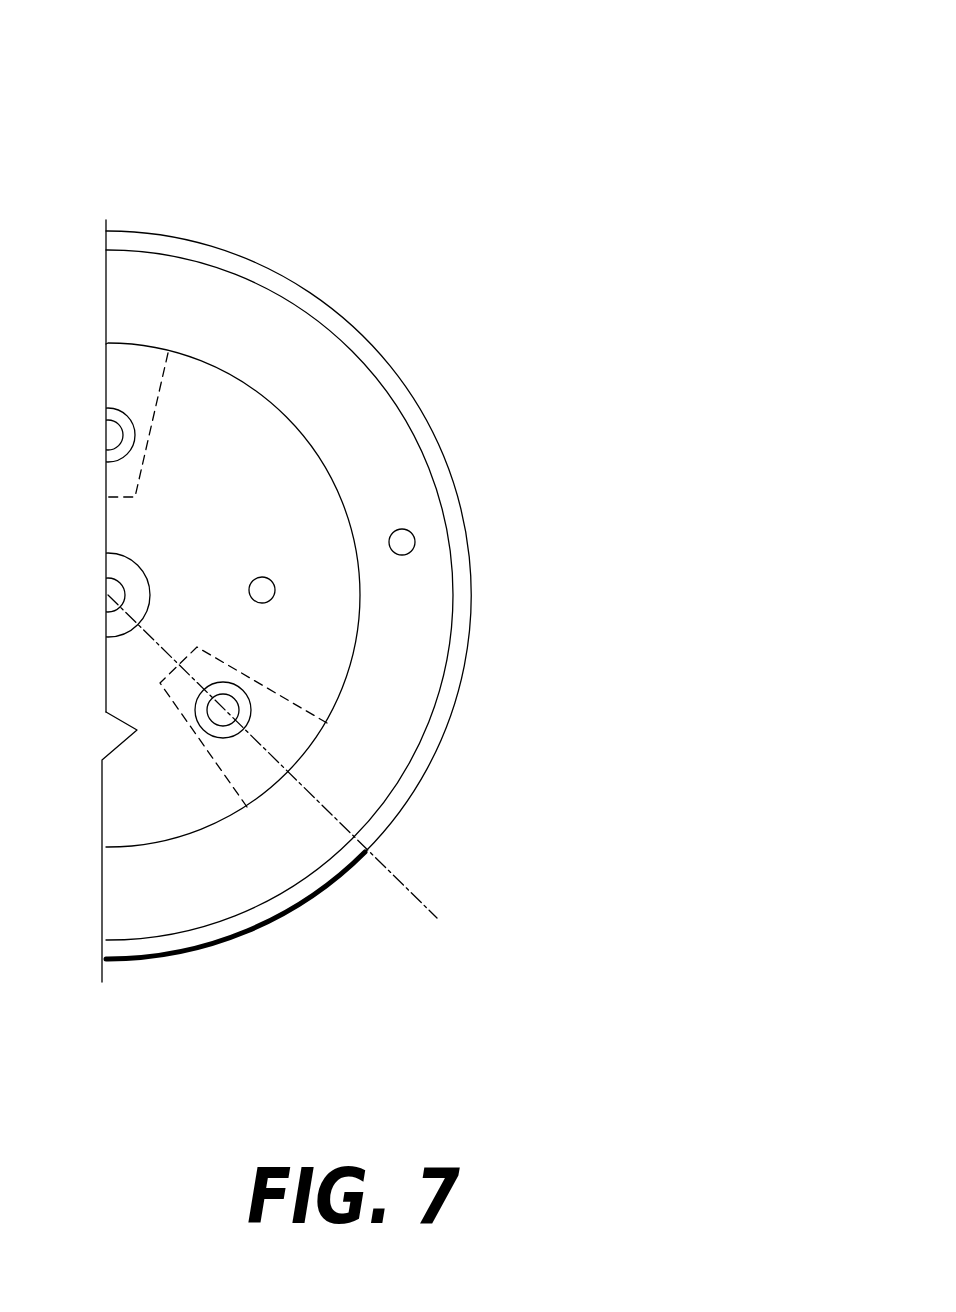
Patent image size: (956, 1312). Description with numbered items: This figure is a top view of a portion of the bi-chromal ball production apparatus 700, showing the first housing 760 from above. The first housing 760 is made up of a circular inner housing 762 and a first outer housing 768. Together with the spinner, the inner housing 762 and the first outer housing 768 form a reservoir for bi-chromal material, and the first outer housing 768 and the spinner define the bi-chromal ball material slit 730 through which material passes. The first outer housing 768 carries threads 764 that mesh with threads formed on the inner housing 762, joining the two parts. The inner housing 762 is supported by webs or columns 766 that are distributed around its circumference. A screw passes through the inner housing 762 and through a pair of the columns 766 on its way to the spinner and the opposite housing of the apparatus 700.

The bi-chromal ball production apparatus 700 is at (588, 118).
The bi-chromal ball material slit 730 is at (385, 367).
The first housing 760 is at (262, 713).
The inner housing 762 is at (267, 593).
The threads 764 is at (180, 353).
The webs or columns 766 is at (263, 783).
The first outer housing 768 is at (410, 538).